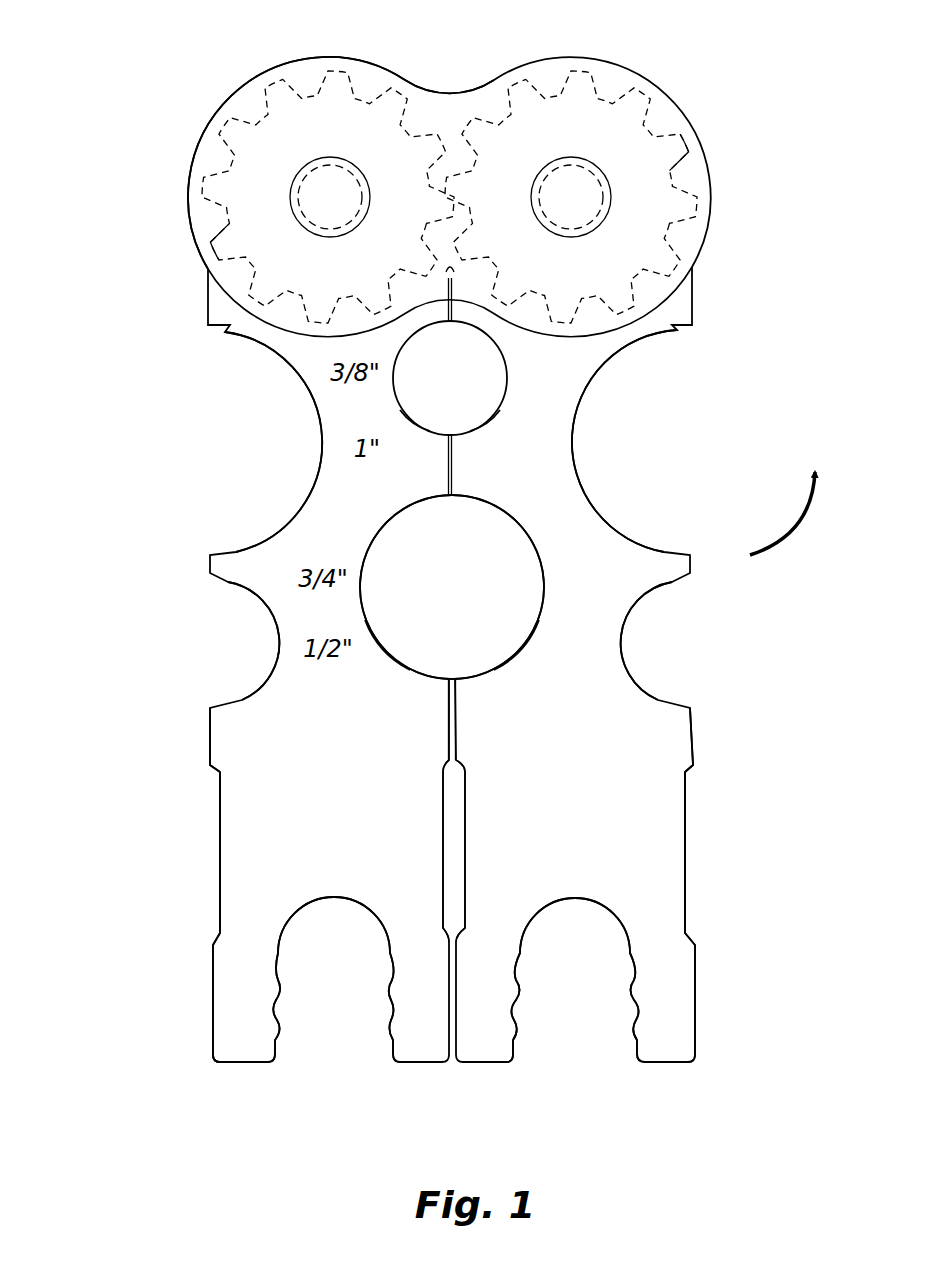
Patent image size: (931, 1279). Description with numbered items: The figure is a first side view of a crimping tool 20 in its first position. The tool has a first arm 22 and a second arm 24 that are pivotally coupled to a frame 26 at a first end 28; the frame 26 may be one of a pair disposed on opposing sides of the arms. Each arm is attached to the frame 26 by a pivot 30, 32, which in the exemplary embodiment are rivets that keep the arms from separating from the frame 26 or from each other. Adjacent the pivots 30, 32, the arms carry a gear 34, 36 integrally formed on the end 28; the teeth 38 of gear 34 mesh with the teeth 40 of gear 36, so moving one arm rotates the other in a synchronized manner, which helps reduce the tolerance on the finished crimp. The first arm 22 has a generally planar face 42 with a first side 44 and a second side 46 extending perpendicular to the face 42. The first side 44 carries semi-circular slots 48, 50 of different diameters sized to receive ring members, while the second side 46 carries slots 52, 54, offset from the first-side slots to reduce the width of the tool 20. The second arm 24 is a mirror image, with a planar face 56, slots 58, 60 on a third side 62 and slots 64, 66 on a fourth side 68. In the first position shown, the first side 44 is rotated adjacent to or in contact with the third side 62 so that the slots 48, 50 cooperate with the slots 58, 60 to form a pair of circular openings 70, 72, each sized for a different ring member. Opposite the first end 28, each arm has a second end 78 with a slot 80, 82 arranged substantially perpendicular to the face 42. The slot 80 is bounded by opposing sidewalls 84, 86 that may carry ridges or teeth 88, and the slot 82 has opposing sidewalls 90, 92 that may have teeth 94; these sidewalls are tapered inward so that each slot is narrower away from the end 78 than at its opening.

The crimping tool 20 is at (118, 110).
The first arm 22 is at (220, 887).
The second arm 24 is at (685, 833).
The frame 26 is at (470, 88).
The first end 28 is at (160, 173).
The pivot 30 is at (333, 236).
The pivot 32 is at (610, 205).
The gear 34 is at (220, 98).
The gear 36 is at (705, 127).
The teeth 38 is at (215, 216).
The teeth 40 is at (678, 178).
The planar face 42 is at (285, 917).
The first side 44 is at (447, 692).
The second side 46 is at (210, 735).
The slot 48 is at (404, 407).
The slot 50 is at (375, 632).
The slot 52 is at (318, 478).
The slot 54 is at (262, 688).
The planar face 56 is at (631, 917).
The slot 58 is at (462, 425).
The slot 60 is at (505, 650).
The third side 62 is at (460, 728).
The slot 64 is at (615, 520).
The slot 66 is at (637, 672).
The fourth side 68 is at (695, 742).
The circular opening 70 is at (450, 378).
The circular opening 72 is at (452, 587).
The second end 78 is at (242, 1064).
The slot 80 is at (336, 1102).
The slot 82 is at (600, 1092).
The sidewall 84 is at (272, 1040).
The sidewall 86 is at (395, 1038).
The teeth 88 is at (278, 995).
The sidewall 90 is at (510, 1040).
The sidewall 92 is at (632, 1018).
The teeth 94 is at (518, 1005).